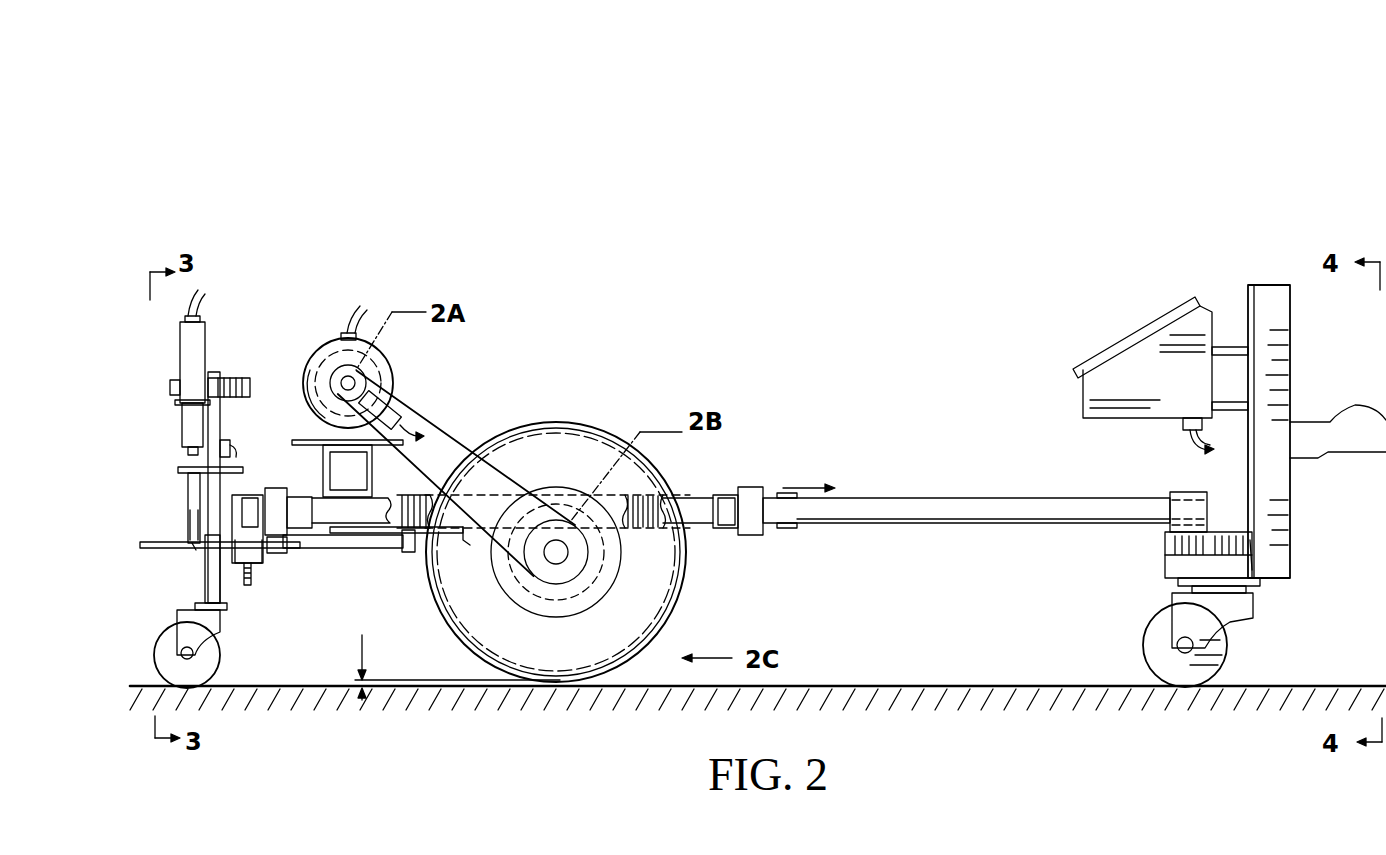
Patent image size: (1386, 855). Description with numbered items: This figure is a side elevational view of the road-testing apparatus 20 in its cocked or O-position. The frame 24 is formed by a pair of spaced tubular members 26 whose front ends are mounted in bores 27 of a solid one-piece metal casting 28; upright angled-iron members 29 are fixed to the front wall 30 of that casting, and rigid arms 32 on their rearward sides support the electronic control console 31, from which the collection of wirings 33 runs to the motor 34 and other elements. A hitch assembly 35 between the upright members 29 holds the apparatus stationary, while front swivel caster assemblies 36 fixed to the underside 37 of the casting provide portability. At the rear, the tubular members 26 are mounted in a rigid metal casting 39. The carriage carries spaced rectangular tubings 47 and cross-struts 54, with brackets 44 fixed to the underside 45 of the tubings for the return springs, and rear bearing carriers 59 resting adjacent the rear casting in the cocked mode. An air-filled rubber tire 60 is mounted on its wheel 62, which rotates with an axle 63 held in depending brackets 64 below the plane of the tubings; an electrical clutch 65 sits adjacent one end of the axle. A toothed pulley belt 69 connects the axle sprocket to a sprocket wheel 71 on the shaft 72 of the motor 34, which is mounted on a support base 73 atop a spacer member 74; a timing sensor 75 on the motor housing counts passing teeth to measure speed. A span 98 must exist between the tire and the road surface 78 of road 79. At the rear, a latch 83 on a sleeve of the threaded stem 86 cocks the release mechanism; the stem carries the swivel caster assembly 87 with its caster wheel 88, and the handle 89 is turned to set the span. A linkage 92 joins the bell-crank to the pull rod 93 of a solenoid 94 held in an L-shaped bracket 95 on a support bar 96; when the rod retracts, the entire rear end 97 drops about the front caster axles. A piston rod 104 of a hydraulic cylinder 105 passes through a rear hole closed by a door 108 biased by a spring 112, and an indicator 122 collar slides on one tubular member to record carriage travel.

The apparatus 20 is at (922, 328).
The frame 24 is at (1015, 500).
The tubular members 26 is at (729, 515).
The bores 27 is at (1195, 520).
The metal casting 28 is at (1170, 492).
The upright angled-iron members 29 is at (1290, 340).
The front wall 30 is at (1250, 548).
The electronic control console 31 is at (1128, 335).
The rigid arms 32 is at (1225, 347).
The collection of wirings 33 is at (360, 312).
The motor 34 is at (330, 343).
The hitch assembly 35 is at (1352, 418).
The front swivel caster assemblies 36 is at (1228, 645).
The underside 37 is at (1178, 582).
The metal casting 39 is at (245, 495).
The brackets 44 is at (440, 535).
The underside 45 is at (482, 545).
The rectangular tubings 47 is at (642, 495).
The cross-struts 54 is at (305, 528).
The bearing carriers 59 is at (268, 535).
The air-filled rubber tire 60 is at (583, 425).
The wheel 62 is at (560, 488).
The axle 63 is at (562, 578).
The depending brackets 64 is at (565, 556).
The electrical clutch 65 is at (540, 585).
The toothed pulley belt 69 is at (460, 432).
The sprocket wheel 71 is at (331, 377).
The shaft 72 is at (355, 378).
The support base 73 is at (298, 440).
The spacer member 74 is at (372, 462).
The timing sensor 75 is at (398, 405).
The road surface 78 is at (905, 686).
The road 79 is at (1005, 686).
The ledge or latch 83 is at (236, 457).
The threaded stem 86 is at (208, 570).
The swivel caster assembly 87 is at (195, 605).
The caster wheel 88 is at (222, 670).
The handle 89 is at (232, 380).
The linkage 92 is at (188, 505).
The pull rod 93 is at (178, 468).
The solenoid 94 is at (207, 335).
The L-shaped bracket 95 is at (180, 405).
The support bar 96 is at (220, 430).
The rear end 97 is at (158, 378).
The span 98 is at (355, 682).
The piston rod 104 is at (165, 548).
The hydraulic cylinder 105 is at (360, 550).
The door 108 is at (262, 560).
The spring 112 is at (252, 585).
The indicator 122 is at (787, 528).